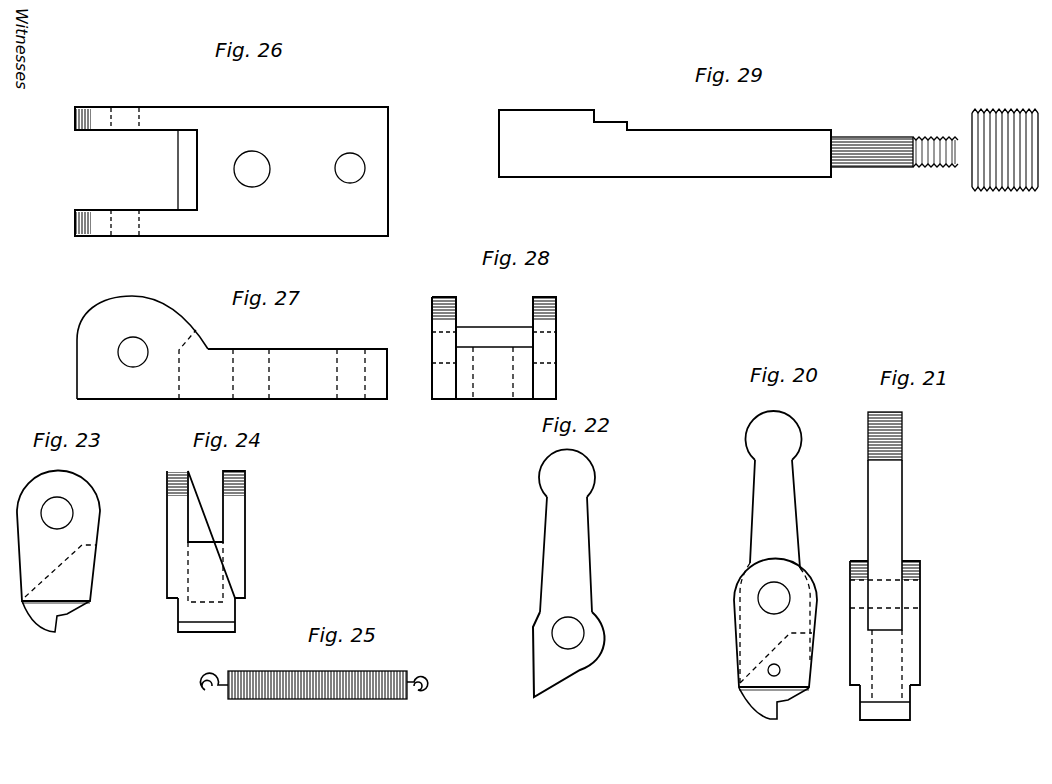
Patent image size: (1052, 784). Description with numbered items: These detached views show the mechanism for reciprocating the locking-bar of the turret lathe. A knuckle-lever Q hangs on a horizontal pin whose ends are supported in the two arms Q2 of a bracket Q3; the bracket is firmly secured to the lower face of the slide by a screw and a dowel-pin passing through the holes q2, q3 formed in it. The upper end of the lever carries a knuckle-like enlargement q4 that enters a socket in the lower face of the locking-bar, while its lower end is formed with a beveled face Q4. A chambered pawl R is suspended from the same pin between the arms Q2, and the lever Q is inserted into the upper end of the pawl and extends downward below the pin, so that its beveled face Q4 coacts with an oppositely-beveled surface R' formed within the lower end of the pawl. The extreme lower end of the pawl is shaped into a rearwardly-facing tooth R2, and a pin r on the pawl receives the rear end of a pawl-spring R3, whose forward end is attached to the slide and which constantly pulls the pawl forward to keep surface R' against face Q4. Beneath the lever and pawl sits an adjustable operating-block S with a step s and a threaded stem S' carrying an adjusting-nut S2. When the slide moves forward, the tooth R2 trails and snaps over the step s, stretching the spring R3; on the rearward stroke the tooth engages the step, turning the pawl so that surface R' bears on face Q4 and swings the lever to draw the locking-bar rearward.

In FIG. 22, the knuckle-lever Q is at (566, 554).
In FIG. 20, the knuckle-lever Q is at (775, 514).
In FIG. 21, the knuckle-lever Q is at (902, 491).
In FIG. 22, the knuckle-like enlargement q4 is at (567, 473).
In FIG. 20, the knuckle-like enlargement q4 is at (774, 435).
In FIG. 21, the knuckle-like enlargement q4 is at (902, 428).
In FIG. 22, the beveled face Q4 is at (569, 654).
In FIG. 20, the beveled face Q4 is at (815, 650).
In FIG. 26, the arms of bracket Q2 is at (88, 108).
In FIG. 27, the arms of bracket Q2 is at (142, 347).
In FIG. 28, the arms of bracket Q2 is at (432, 312).
In FIG. 26, the bracket Q3 is at (231, 171).
In FIG. 27, the bracket Q3 is at (232, 374).
In FIG. 28, the bracket Q3 is at (488, 335).
In FIG. 26, the hole q2 is at (268, 182).
In FIG. 26, the hole q3 is at (351, 183).
In FIG. 23, the chambered pawl R is at (58, 536).
In FIG. 24, the chambered pawl R is at (218, 536).
In FIG. 20, the chambered pawl R is at (755, 622).
In FIG. 21, the chambered pawl R is at (900, 631).
In FIG. 23, the beveled surface R' is at (61, 571).
In FIG. 20, the beveled surface R' is at (789, 658).
In FIG. 23, the tooth R2 is at (40, 626).
In FIG. 24, the tooth R2 is at (218, 622).
In FIG. 20, the tooth R2 is at (762, 708).
In FIG. 21, the tooth R2 is at (902, 712).
In FIG. 25, the pawl-spring R3 is at (313, 694).
In FIG. 20, the pin r is at (767, 672).
In FIG. 29, the operating-block S is at (665, 143).
In FIG. 29, the step s is at (574, 98).
In FIG. 29, the threaded stem S' is at (894, 142).
In FIG. 29, the adjusting-nut S2 is at (1005, 138).